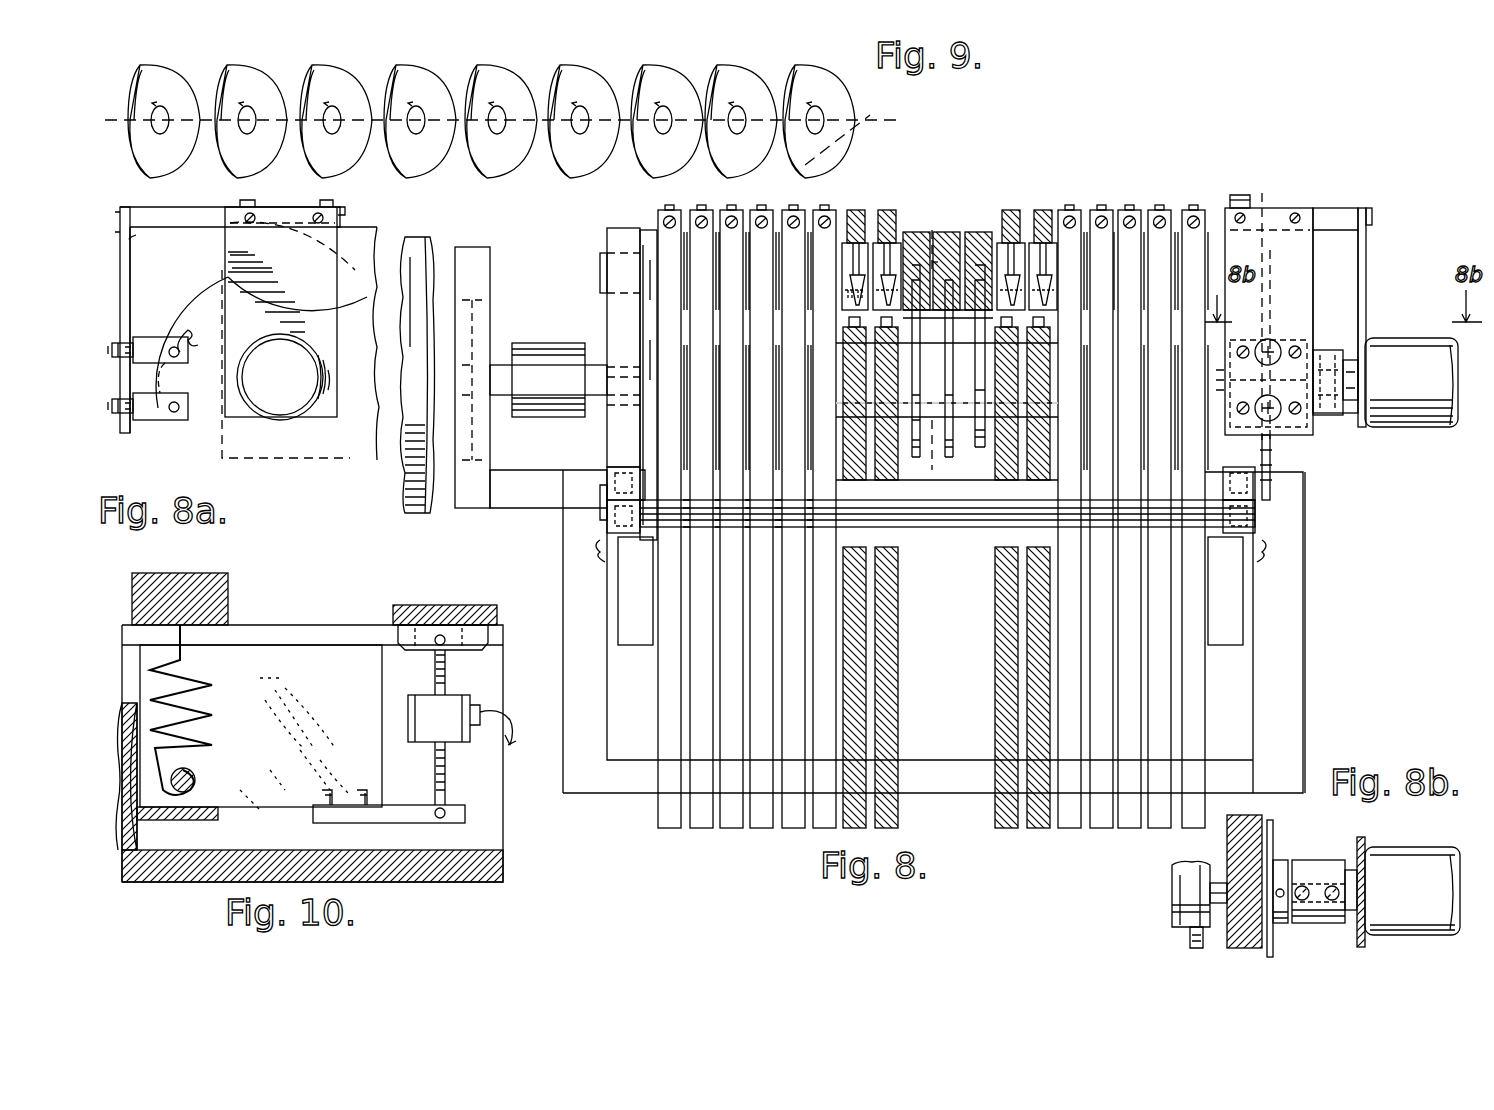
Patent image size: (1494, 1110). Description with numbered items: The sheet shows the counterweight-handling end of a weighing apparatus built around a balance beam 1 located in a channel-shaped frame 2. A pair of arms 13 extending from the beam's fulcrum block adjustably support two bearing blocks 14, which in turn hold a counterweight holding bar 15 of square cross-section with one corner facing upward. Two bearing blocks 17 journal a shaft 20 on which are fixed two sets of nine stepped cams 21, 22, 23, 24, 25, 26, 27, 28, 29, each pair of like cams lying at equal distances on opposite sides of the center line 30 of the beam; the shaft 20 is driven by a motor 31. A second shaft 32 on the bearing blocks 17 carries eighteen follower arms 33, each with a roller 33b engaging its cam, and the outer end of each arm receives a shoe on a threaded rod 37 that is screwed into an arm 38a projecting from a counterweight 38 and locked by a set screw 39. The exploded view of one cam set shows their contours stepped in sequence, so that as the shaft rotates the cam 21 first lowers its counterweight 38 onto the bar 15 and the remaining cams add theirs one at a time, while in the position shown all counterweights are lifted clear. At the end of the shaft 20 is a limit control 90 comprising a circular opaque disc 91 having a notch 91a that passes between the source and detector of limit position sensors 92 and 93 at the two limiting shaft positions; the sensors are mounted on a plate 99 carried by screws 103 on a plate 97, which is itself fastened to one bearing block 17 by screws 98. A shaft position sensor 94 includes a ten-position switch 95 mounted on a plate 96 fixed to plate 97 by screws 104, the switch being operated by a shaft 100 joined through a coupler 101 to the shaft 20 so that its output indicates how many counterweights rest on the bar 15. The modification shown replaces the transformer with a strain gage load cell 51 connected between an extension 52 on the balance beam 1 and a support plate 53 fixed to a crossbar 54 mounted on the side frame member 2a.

In FIG. 10, the balance beam 1 is at (244, 810).
In FIG. 10, the channel-shaped frame 2 is at (562, 690).
In FIG. 8, the channel-shaped frame 2 is at (567, 685).
In FIG. 10, the side frame member 2a is at (495, 836).
In FIG. 8, the arms 13 is at (625, 590).
In FIG. 8, the bearing blocks 14 is at (605, 525).
In FIG. 8, the counterweight holding bar 15 is at (924, 506).
In FIG. 8a, the bearing blocks 17 is at (358, 232).
In FIG. 8, the bearing blocks 17 is at (1262, 230).
In FIG. 8b, the bearing blocks 17 is at (1232, 848).
In FIG. 8, the shaft 20 is at (1215, 430).
In FIG. 8b, the shaft 20 is at (1218, 905).
In FIG. 9, the cam 21 is at (822, 85).
In FIG. 9, the cam 22 is at (742, 75).
In FIG. 9, the cam 23 is at (667, 75).
In FIG. 9, the cam 24 is at (585, 75).
In FIG. 9, the cam 25 is at (504, 75).
In FIG. 9, the cam 26 is at (422, 75).
In FIG. 9, the cam 27 is at (340, 75).
In FIG. 9, the cam 28 is at (257, 75).
In FIG. 9, the cam 29 is at (172, 75).
In FIG. 8b, the cam 29 is at (1172, 918).
In FIG. 9, the center line 30 is at (880, 110).
In FIG. 8, the center line 30 is at (940, 205).
In FIG. 8, the motor 31 is at (427, 258).
In FIG. 8, the shaft 32 is at (1275, 268).
In FIG. 8, the follower arms 33 is at (963, 232).
In FIG. 8, the roller 33b is at (910, 233).
In FIG. 8, the threaded rod 37 is at (1046, 215).
In FIG. 8, the counterweight 38 is at (1093, 825).
In FIG. 8, the arm 38a is at (1014, 225).
In FIG. 8, the set screw 39 is at (828, 210).
In FIG. 10, the strain gage load cell 51 is at (470, 695).
In FIG. 10, the extension 52 is at (384, 813).
In FIG. 10, the support plate 53 is at (460, 628).
In FIG. 10, the crossbar 54 is at (425, 604).
In FIG. 8, the limit control 90 is at (1290, 338).
In FIG. 8a, the circular opaque disc 91 is at (289, 484).
In FIG. 8, the circular opaque disc 91 is at (1272, 452).
In FIG. 8b, the circular opaque disc 91 is at (1272, 835).
In FIG. 8a, the notch 91a is at (188, 304).
In FIG. 8a, the limit position sensor 92 is at (167, 346).
In FIG. 8a, the limit position sensor 93 is at (173, 417).
In FIG. 8a, the shaft position sensor 94 is at (293, 373).
In FIG. 8, the shaft position sensor 94 is at (1413, 335).
In FIG. 8, the 10 position switch 95 is at (1423, 415).
In FIG. 8b, the 10 position switch 95 is at (1388, 845).
In FIG. 8a, the plate 96 is at (330, 253).
In FIG. 8, the plate 96 is at (1368, 243).
In FIG. 8b, the plate 96 is at (1365, 840).
In FIG. 8a, the plate 97 is at (150, 215).
In FIG. 8, the plate 97 is at (1337, 212).
In FIG. 8a, the screws 98 is at (257, 207).
In FIG. 8, the screws 98 is at (1232, 200).
In FIG. 8a, the plate 99 is at (130, 239).
In FIG. 8, the plate 99 is at (1330, 273).
In FIG. 8, the shaft 100 is at (1352, 415).
In FIG. 8b, the shaft 100 is at (1350, 910).
In FIG. 8, the coupler 101 is at (1325, 420).
In FIG. 8b, the coupler 101 is at (1300, 866).
In FIG. 8, the screws 103 is at (1296, 212).
In FIG. 8a, the screws 104 is at (340, 210).
In FIG. 8, the screws 104 is at (1372, 215).